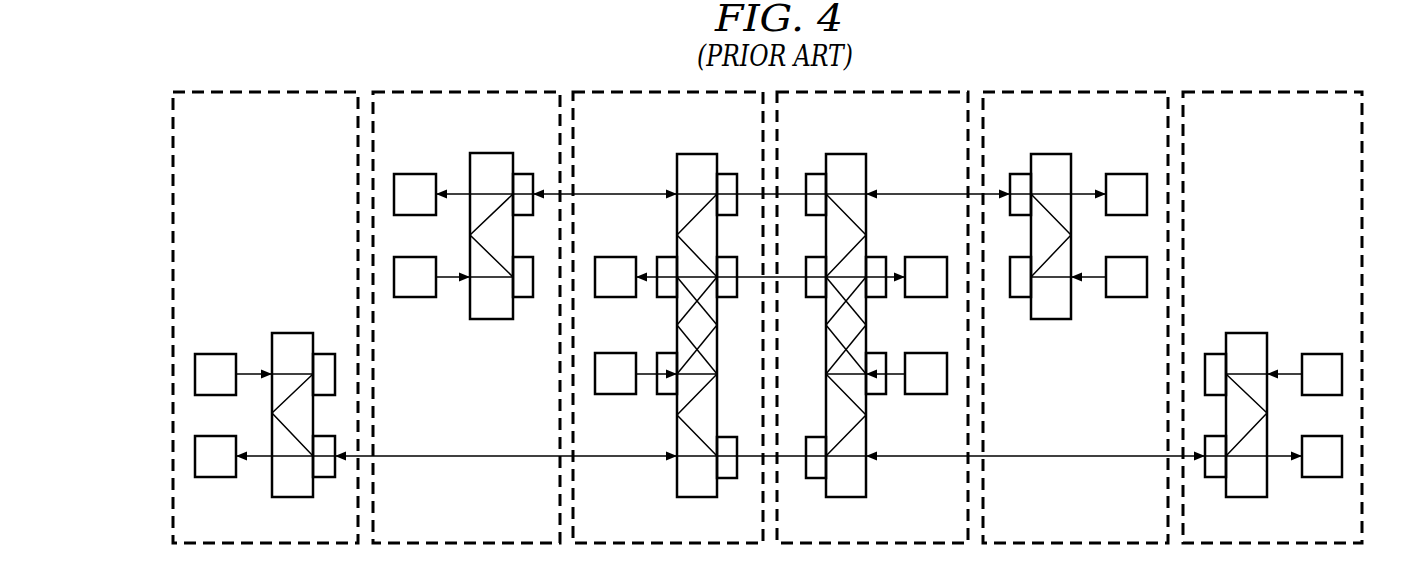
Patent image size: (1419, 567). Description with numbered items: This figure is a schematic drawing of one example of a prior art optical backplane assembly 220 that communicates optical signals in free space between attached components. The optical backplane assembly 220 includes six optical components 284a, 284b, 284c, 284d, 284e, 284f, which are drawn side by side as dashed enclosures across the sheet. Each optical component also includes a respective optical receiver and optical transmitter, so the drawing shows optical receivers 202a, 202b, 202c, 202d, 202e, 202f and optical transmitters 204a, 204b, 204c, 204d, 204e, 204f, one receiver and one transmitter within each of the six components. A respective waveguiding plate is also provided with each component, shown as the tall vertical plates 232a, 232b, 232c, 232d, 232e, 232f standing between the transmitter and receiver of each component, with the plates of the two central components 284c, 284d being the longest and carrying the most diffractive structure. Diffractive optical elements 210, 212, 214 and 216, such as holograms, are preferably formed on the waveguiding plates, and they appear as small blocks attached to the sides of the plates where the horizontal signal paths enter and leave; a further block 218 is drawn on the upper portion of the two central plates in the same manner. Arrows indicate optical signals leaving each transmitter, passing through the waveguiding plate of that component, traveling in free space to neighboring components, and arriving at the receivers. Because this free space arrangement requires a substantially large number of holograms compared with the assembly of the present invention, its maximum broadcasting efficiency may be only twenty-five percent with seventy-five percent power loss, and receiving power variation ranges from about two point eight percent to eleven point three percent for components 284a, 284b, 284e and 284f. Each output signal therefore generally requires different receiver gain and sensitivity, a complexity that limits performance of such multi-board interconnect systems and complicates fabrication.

The optical backplane assembly 220 is at (1345, 76).
The optical component 284a is at (272, 92).
The optical component 284b is at (473, 92).
The optical component 284c is at (638, 92).
The optical component 284d is at (925, 92).
The optical component 284e is at (1085, 92).
The optical component 284f is at (1280, 92).
The waveguiding plate 232a is at (292, 333).
The waveguiding plate 232b is at (490, 153).
The waveguiding plate 232c is at (695, 154).
The waveguiding plate 232d is at (848, 154).
The waveguiding plate 232e is at (1052, 154).
The waveguiding plate 232f is at (1250, 333).
The optical receiver 202a is at (215, 477).
The optical receiver 202b is at (415, 174).
The optical receiver 202c is at (615, 297).
The optical receiver 202d is at (925, 297).
The optical receiver 202e is at (1125, 174).
The optical receiver 202f is at (1320, 477).
The optical transmitter 204a is at (215, 354).
The optical transmitter 204b is at (415, 297).
The optical transmitter 204c is at (615, 394).
The optical transmitter 204d is at (925, 394).
The optical transmitter 204e is at (1125, 297).
The optical transmitter 204f is at (1320, 354).
The diffractive optical element 210 is at (325, 477).
The diffractive optical element 212 is at (325, 354).
The diffractive optical element 214 is at (727, 478).
The diffractive optical element 216 is at (727, 297).
The switch port 218 is at (727, 174).